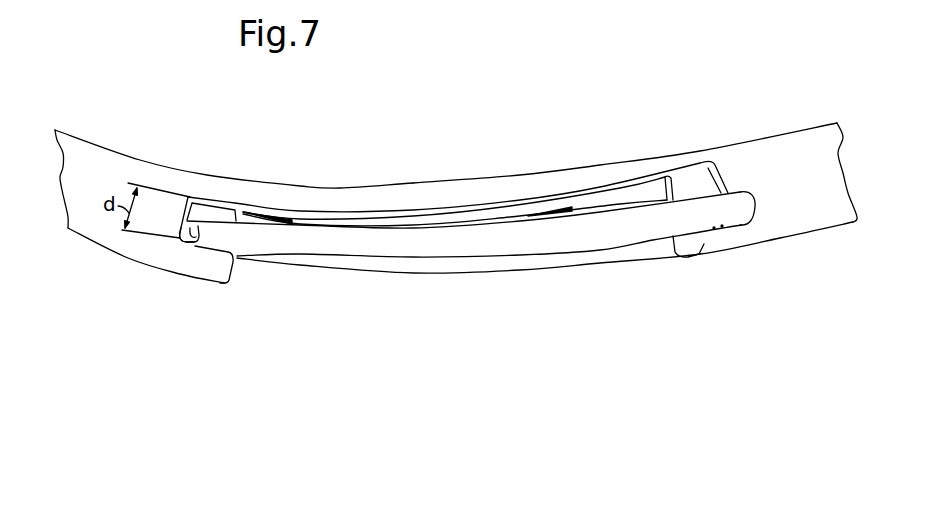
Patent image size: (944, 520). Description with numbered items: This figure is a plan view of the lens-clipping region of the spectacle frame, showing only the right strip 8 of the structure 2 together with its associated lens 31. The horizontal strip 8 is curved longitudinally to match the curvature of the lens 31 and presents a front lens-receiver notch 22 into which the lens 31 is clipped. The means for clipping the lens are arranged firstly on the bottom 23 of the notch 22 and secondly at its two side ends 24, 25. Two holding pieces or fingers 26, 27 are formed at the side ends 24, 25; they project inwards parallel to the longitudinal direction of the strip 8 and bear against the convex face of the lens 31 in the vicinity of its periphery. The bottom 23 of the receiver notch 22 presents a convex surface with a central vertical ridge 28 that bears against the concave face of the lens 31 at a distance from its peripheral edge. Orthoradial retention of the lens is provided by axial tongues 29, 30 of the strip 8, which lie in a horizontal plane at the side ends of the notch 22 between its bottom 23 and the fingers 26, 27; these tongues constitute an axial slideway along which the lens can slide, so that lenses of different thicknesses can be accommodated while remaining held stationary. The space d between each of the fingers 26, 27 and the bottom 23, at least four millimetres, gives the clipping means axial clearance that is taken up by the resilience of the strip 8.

The structure 2 is at (118, 256).
The right strip 8 is at (812, 228).
The front lens-receiver notch 22 is at (348, 285).
The bottom of the receiver notch 23 is at (618, 205).
The side end of the receiver notch 24 is at (196, 244).
The side end of the receiver notch 25 is at (709, 178).
The holding finger 26 is at (208, 268).
The holding finger 27 is at (702, 248).
The central vertical ridge 28 is at (422, 230).
The axial tongue 29 is at (222, 210).
The axial tongue 30 is at (677, 187).
The lens 31 is at (507, 268).